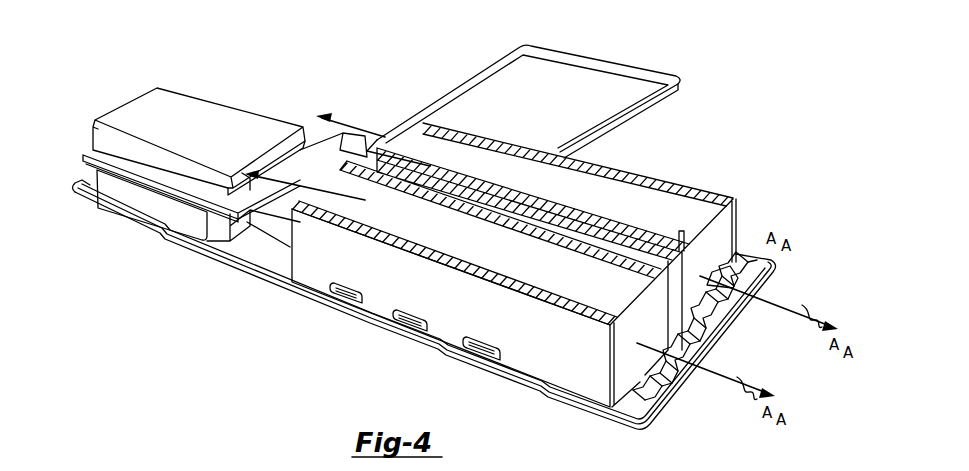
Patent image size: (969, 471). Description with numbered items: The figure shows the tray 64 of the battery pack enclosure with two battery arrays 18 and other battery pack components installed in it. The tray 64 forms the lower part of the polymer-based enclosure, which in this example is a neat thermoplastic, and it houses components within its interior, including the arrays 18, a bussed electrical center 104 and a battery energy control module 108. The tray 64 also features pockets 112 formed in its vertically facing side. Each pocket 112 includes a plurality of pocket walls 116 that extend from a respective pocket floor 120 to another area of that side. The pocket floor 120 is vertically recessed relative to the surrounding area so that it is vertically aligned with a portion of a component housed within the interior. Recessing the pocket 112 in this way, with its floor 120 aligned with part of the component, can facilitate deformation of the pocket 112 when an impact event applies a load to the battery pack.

The battery array 18 is at (668, 218).
The tray 64 is at (665, 400).
The bussed electrical center 104 is at (150, 206).
The battery energy control module 108 is at (189, 113).
The pocket 112 is at (255, 234).
The pocket wall 116 is at (642, 398).
The pocket floor 120 is at (738, 277).